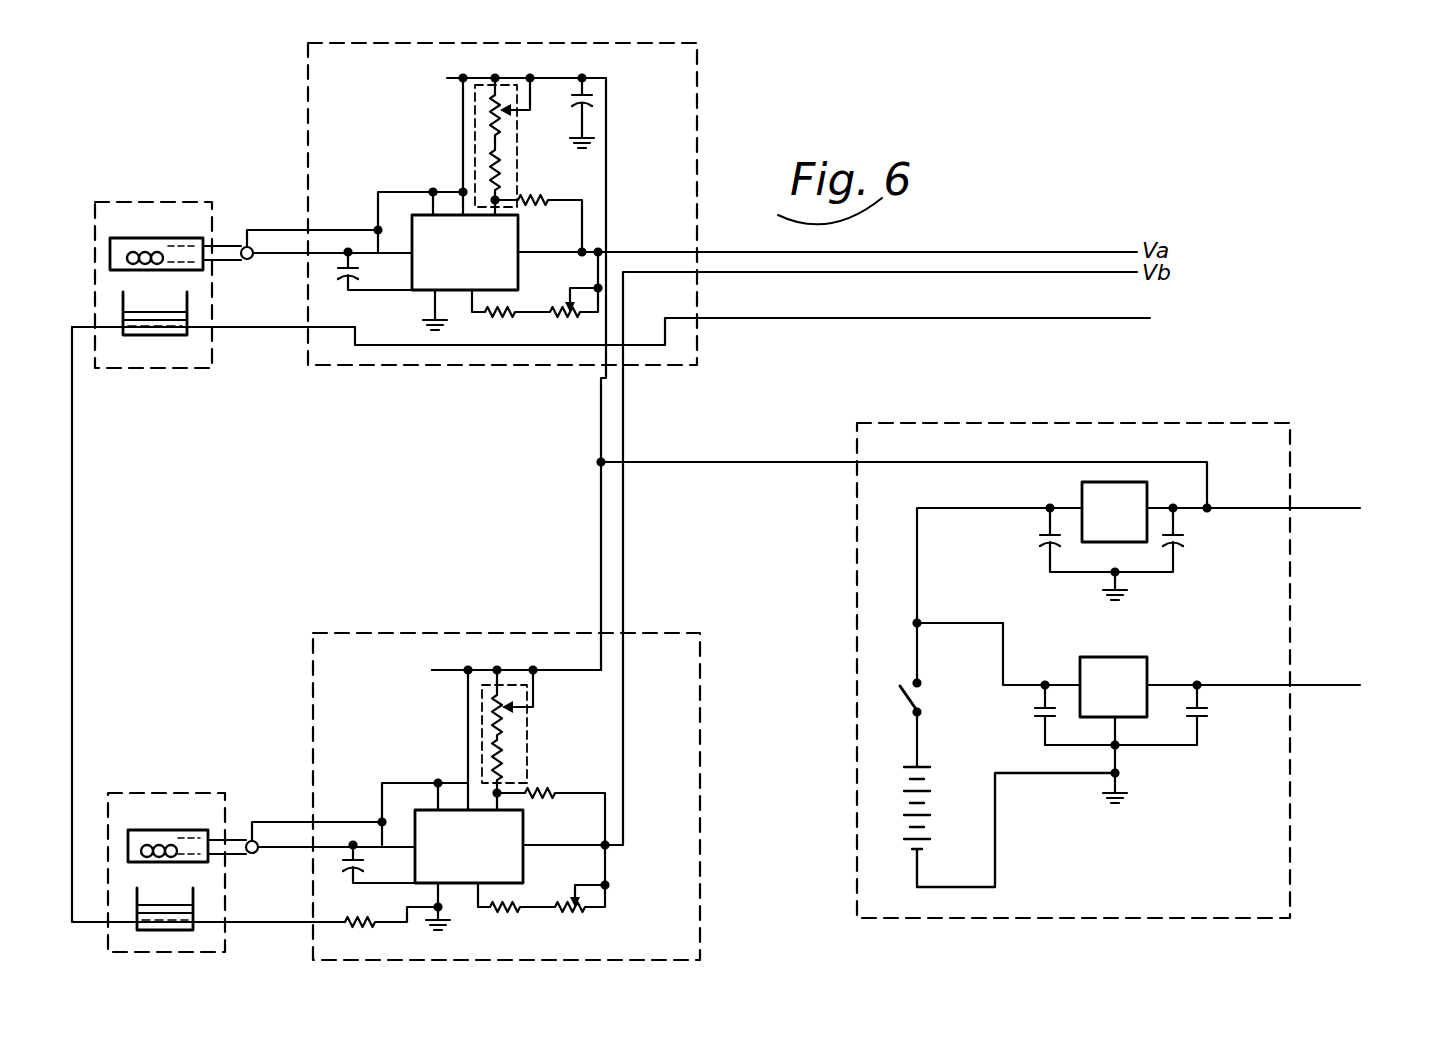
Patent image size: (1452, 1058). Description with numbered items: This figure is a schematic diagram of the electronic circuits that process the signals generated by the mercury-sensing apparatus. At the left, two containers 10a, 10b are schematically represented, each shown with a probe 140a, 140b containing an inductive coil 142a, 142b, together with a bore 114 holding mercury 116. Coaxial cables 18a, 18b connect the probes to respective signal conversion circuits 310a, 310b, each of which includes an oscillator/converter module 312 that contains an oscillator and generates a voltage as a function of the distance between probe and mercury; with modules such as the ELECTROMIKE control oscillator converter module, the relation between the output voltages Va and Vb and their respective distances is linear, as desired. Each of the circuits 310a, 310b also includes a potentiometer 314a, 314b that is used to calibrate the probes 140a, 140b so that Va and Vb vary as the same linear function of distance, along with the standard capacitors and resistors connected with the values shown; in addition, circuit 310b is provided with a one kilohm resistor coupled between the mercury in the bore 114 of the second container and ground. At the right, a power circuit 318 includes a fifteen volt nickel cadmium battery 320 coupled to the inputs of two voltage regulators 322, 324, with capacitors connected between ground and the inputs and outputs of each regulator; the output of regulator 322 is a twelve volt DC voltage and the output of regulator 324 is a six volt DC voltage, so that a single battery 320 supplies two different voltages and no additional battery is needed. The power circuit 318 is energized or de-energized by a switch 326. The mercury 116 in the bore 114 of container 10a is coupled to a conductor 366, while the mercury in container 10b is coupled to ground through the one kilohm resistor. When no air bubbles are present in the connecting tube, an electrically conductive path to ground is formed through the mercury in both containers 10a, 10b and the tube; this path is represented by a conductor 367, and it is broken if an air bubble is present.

The container 10a is at (212, 212).
The container 10b is at (225, 812).
The probe 140a is at (112, 240).
The probe 140b is at (128, 831).
The inductive coil 142a is at (160, 250).
The inductive coil 142b is at (170, 843).
The coaxial cable 18a is at (246, 262).
The coaxial cable 18b is at (252, 855).
The bore 114 is at (123, 300).
The mercury 116 is at (160, 328).
The signal conversion circuit 310a is at (308, 72).
The signal conversion circuit 310b is at (392, 633).
The oscillator/converter module 312 is at (402, 222).
The potentiometer 314a is at (475, 133).
The potentiometer 314b is at (482, 722).
The power circuit 318 is at (857, 540).
The nickel cadmium battery 320 is at (930, 788).
The voltage regulator 322 is at (1128, 492).
The voltage regulator 324 is at (1131, 662).
The switch 326 is at (918, 700).
The conductor 366 is at (905, 320).
The conductor 367 is at (75, 457).